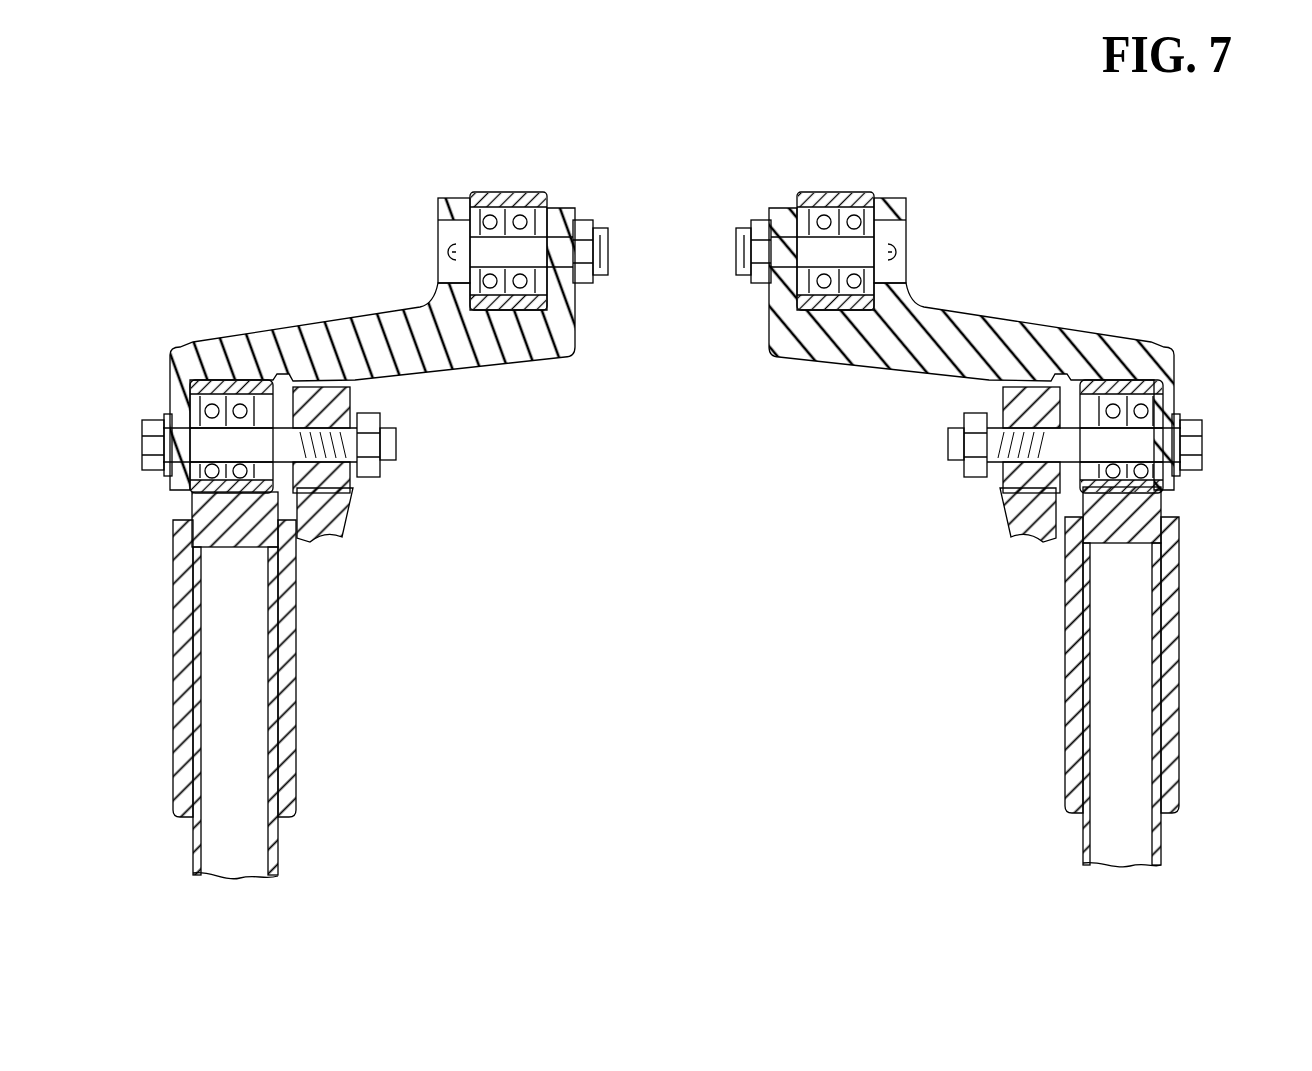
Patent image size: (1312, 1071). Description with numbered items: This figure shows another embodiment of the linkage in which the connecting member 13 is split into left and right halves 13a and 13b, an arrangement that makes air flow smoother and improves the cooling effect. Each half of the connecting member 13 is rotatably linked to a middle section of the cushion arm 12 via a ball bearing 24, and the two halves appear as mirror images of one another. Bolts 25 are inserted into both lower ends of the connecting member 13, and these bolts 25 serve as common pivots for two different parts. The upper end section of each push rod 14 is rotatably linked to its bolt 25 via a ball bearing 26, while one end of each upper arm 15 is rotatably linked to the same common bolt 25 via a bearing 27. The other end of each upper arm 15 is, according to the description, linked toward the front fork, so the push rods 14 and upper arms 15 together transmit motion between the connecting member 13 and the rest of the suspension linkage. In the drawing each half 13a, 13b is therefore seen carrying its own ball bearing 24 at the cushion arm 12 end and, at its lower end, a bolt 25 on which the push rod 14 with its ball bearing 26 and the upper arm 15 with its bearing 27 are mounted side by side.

The cushion arm 12 is at (498, 192).
The ball bearing 24 is at (545, 192).
The connecting member 13 is at (672, 292).
The left half of the connecting member 13a is at (516, 355).
The right half of the connecting member 13b is at (876, 368).
The ball bearing 26 is at (200, 382).
The bolt 25 is at (197, 452).
The bearing 27 is at (357, 483).
The upper arm 15 is at (335, 527).
The push rod 14 is at (290, 747).